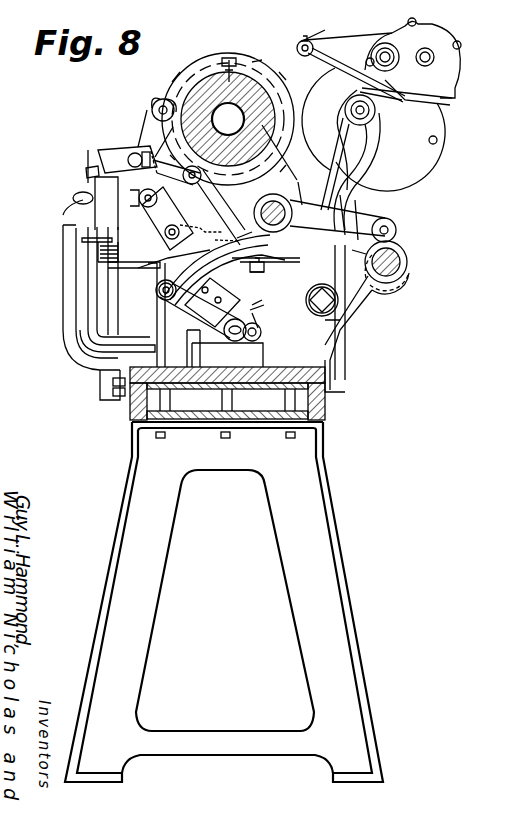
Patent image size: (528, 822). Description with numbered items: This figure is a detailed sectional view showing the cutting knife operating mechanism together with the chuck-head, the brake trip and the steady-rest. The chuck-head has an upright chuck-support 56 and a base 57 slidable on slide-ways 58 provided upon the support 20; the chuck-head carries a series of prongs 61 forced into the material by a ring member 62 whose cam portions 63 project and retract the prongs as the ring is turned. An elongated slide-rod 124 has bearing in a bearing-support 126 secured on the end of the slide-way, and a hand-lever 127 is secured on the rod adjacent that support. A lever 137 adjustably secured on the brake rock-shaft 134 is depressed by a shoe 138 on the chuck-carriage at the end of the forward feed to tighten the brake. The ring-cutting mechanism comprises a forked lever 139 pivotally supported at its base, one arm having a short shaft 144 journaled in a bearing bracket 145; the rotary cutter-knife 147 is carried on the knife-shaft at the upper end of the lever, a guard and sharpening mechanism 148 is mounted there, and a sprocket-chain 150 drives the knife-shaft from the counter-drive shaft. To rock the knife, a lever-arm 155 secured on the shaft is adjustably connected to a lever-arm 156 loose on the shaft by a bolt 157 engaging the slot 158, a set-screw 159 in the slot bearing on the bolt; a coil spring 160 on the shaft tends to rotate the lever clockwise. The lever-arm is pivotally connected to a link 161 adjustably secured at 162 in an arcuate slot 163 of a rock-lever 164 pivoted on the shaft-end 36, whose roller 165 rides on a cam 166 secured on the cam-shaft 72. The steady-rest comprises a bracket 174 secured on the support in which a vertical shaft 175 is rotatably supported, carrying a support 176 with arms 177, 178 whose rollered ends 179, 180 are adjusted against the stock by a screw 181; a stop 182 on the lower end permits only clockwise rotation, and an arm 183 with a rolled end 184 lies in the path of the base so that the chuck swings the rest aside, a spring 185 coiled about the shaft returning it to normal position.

The support 20 is at (130, 398).
The shaft end 36 is at (305, 192).
The upright chuck-support 56 is at (282, 170).
The base 57 is at (157, 318).
The slide-ways 58 is at (180, 350).
The prongs 61 is at (232, 55).
The ring member 62 is at (203, 58).
The cam portions 63 is at (258, 57).
The cam-shaft 72 is at (408, 266).
The slide-rod 124 is at (76, 204).
The bearing-support 126 is at (165, 232).
The hand-lever 127 is at (86, 172).
The rock-shaft 134 is at (201, 219).
The lever 137 is at (225, 266).
The shoe 138 is at (301, 216).
The forked lever 139 is at (365, 196).
The short shaft 144 is at (340, 305).
The bearing bracket 145 is at (348, 350).
The rotary cutter-knife 147 is at (350, 38).
The guard and sharpening mechanism 148 is at (452, 72).
The sprocket-chain 150 is at (350, 80).
The lever-arm 155 is at (348, 335).
The lever-arm 156 is at (256, 303).
The bolt 157 is at (338, 380).
The slot 158 is at (213, 302).
The set-screw 159 is at (250, 342).
The coil spring 160 is at (345, 320).
The link 161 is at (203, 312).
The adjustable connection 162 is at (158, 297).
The arcuate slot 163 is at (158, 290).
The rock-lever 164 is at (372, 212).
The roller 165 is at (397, 232).
The cam 166 is at (404, 291).
The bracket 174 is at (74, 315).
The vertical shaft 175 is at (108, 288).
The support 176 is at (130, 152).
The arm 177 is at (150, 125).
The arm 178 is at (140, 191).
The rollered end 179 is at (158, 98).
The rollered end 180 is at (211, 205).
The screw 181 is at (88, 152).
The stop 182 is at (108, 380).
The arm 183 is at (165, 262).
The rolled end 184 is at (266, 263).
The spring 185 is at (82, 240).